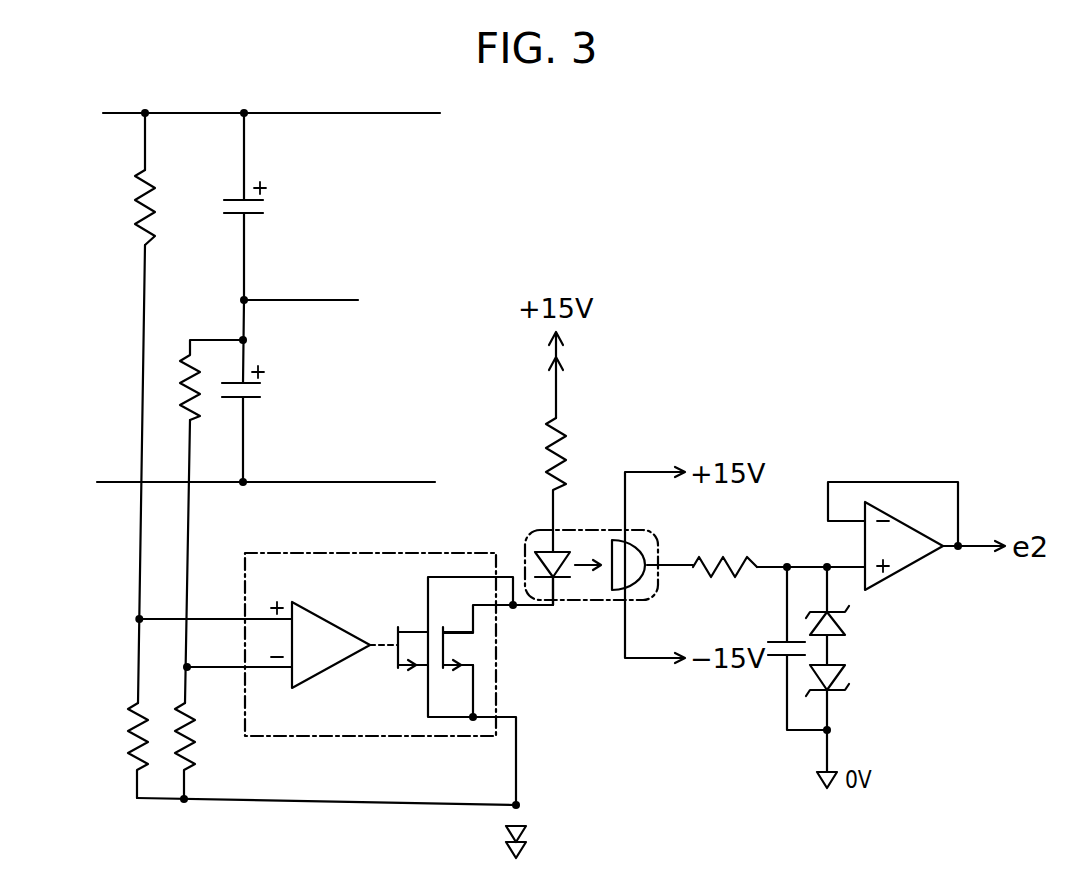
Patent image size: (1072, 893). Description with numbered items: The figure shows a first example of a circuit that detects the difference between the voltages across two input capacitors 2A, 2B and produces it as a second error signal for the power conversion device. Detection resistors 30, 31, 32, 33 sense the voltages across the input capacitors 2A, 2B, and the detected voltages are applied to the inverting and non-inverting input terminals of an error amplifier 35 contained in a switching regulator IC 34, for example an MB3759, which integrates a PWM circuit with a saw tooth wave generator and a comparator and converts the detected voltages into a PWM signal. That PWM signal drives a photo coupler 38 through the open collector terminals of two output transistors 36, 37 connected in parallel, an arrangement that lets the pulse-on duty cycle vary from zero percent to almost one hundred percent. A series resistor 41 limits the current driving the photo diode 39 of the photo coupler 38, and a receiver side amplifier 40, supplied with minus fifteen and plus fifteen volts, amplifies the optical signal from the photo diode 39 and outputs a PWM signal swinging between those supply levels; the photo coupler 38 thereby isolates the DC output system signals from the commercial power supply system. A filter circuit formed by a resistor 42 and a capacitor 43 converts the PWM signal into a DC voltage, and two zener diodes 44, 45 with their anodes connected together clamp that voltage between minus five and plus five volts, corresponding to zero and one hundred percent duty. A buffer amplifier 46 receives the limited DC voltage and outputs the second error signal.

The input capacitor 2A is at (291, 206).
The input capacitor 2B is at (272, 391).
The detection resistor 30 is at (128, 217).
The detection resistor 31 is at (123, 748).
The detection resistor 32 is at (183, 422).
The detection resistor 33 is at (197, 762).
The switching regulator IC 34 is at (333, 553).
The error amplifier 35 is at (333, 673).
The output transistor 36 is at (392, 640).
The output transistor 37 is at (440, 627).
The photo coupler 38 is at (591, 602).
The photo diode 39 is at (543, 548).
The receiver side amplifier 40 is at (640, 548).
The series resistor 41 is at (565, 422).
The resistor 42 is at (738, 555).
The capacitor 43 is at (770, 660).
The zener diode 44 is at (843, 622).
The zener diode 45 is at (843, 682).
The buffer amplifier 46 is at (912, 570).